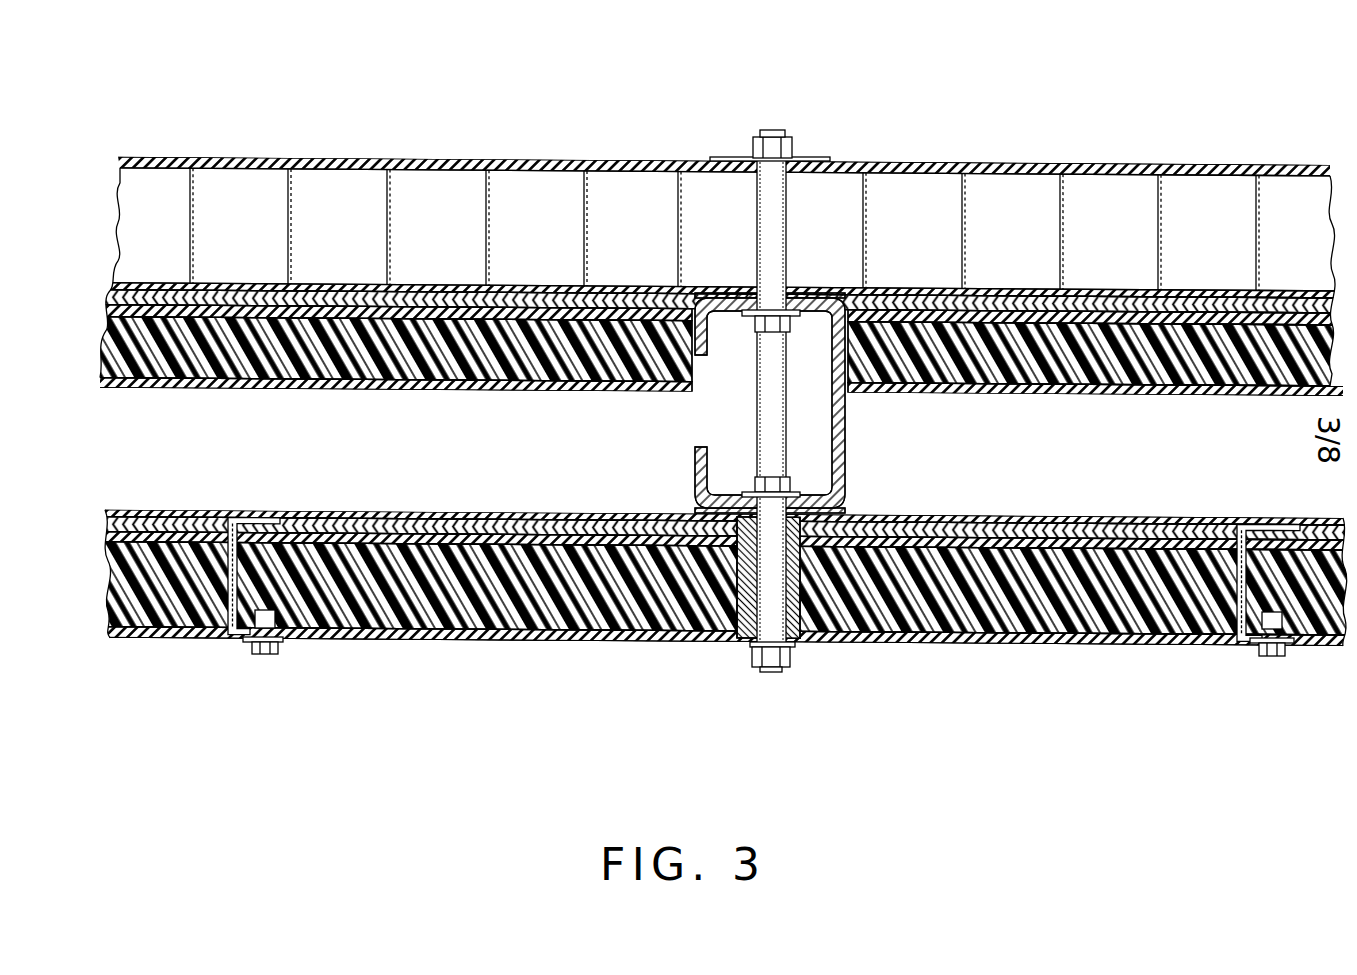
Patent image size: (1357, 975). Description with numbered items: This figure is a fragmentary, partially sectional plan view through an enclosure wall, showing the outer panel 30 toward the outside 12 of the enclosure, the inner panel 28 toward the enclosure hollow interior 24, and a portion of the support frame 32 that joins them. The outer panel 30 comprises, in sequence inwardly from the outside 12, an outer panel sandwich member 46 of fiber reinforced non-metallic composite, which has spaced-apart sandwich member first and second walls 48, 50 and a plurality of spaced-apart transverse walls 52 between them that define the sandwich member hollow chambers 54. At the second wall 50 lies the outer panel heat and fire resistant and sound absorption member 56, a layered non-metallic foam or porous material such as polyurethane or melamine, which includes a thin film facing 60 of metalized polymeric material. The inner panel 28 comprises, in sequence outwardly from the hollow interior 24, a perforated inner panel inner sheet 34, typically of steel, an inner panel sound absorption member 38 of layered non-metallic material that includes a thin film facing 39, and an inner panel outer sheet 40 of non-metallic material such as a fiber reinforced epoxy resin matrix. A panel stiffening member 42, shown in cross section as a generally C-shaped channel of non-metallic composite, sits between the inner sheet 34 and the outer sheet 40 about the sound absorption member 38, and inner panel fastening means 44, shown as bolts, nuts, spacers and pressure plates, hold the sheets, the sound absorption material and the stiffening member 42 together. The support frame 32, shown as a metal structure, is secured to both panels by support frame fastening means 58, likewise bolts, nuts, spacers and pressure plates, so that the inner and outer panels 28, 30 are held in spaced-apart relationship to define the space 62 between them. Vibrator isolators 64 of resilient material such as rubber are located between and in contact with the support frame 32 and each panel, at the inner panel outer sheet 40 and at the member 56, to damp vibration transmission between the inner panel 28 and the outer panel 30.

The outside of enclosure 12 is at (941, 86).
The enclosure hollow interior 24 is at (1009, 749).
The inner panel 28 is at (156, 656).
The outer panel 30 is at (352, 52).
The support frame 32 is at (847, 432).
The inner panel inner sheet 34 is at (561, 638).
The inner panel sound absorption member 38 is at (433, 604).
The thin film facing 39 is at (647, 637).
The inner panel outer sheet 40 is at (470, 514).
The panel stiffening member 42 is at (282, 518).
The inner panel fastening means 44 is at (263, 656).
The outer panel sandwich member 46 is at (246, 130).
The sandwich member first wall 48 is at (346, 160).
The sandwich member second wall 50 is at (320, 283).
The transverse walls 52 is at (286, 239).
The sandwich member hollow chambers 54 is at (411, 239).
The outer panel heat and fire resistant and sound absorption member 56 is at (416, 374).
The support frame fastening means 58 is at (796, 110).
The thin film facing 60 is at (522, 392).
The space 62 is at (539, 457).
The vibrator isolators 64 is at (808, 298).